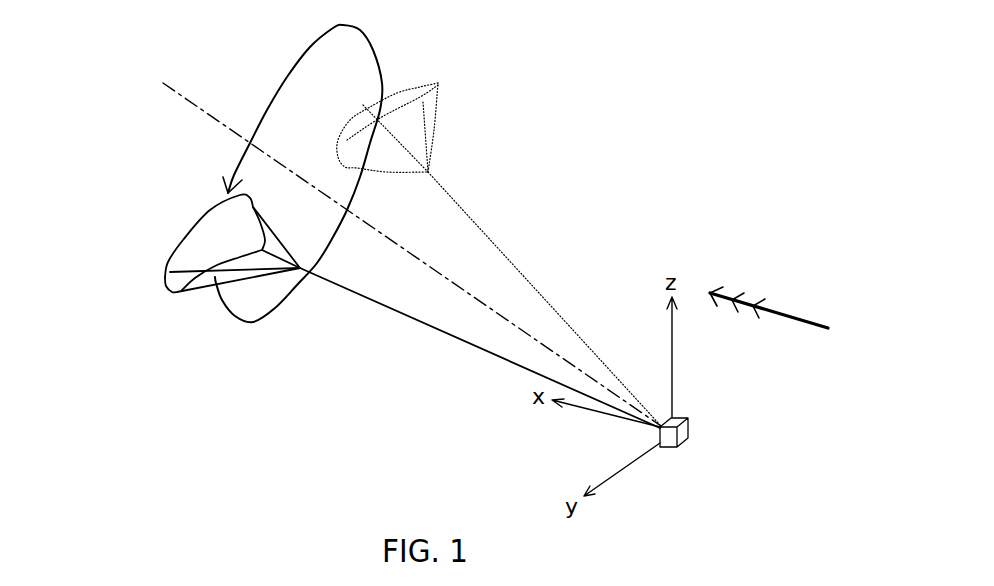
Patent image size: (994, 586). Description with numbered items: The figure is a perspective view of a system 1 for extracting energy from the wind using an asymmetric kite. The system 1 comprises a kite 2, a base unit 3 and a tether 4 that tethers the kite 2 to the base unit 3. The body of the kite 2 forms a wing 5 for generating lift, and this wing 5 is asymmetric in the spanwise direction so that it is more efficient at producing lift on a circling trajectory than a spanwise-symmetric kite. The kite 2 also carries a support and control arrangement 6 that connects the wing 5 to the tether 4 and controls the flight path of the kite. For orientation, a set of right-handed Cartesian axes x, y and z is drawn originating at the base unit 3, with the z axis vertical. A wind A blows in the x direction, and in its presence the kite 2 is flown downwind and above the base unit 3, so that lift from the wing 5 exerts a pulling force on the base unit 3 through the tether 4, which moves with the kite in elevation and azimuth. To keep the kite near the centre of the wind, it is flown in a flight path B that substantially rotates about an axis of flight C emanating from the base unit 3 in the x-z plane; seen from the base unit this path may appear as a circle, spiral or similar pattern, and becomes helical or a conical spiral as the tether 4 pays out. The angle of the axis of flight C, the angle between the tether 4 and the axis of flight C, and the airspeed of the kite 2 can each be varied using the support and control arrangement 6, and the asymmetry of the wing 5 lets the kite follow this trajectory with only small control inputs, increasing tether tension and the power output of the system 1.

The system 1 is at (694, 131).
The kite 2 is at (162, 291).
The base unit 3 is at (685, 442).
The tether 4 is at (392, 308).
The wing 5 is at (187, 237).
The support and control arrangement 6 is at (148, 258).
The wind A is at (769, 306).
The flight path B is at (313, 42).
The axis of flight C is at (177, 100).